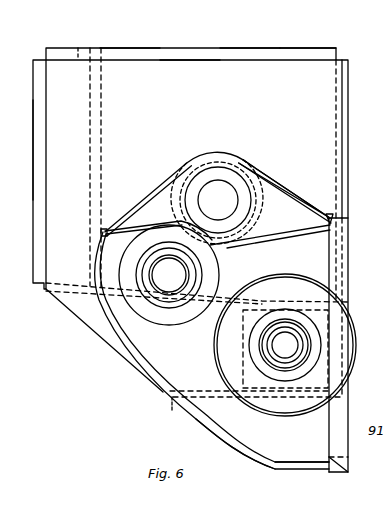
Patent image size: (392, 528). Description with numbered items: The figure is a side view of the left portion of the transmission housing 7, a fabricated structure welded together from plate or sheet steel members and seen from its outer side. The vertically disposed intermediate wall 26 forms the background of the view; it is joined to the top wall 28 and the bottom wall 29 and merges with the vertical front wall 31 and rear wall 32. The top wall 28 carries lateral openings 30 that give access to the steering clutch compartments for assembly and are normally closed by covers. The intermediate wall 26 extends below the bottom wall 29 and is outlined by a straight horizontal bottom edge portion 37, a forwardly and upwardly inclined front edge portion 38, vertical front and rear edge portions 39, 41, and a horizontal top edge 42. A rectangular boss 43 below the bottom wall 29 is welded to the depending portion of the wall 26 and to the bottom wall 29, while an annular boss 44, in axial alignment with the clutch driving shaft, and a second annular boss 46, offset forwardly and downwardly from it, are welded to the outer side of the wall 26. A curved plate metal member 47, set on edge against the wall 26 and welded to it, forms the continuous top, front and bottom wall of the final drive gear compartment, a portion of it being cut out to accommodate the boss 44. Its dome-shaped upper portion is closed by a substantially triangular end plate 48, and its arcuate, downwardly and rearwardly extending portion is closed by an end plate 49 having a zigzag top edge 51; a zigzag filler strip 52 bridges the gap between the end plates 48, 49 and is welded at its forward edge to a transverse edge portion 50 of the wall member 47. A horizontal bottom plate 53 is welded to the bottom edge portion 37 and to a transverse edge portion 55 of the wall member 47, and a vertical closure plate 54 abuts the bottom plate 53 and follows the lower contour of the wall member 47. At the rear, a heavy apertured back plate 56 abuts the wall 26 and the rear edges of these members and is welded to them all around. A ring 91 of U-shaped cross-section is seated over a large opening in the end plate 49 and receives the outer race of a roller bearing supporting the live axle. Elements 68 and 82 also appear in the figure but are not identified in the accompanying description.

The transmission housing 7 is at (292, 91).
The intermediate wall 26 is at (181, 64).
The top wall 28 is at (286, 54).
The bottom wall 29 is at (262, 307).
The lateral openings 30 is at (138, 56).
The front wall 31 is at (40, 143).
The rear wall 32 is at (344, 160).
The bottom edge portion 37 is at (163, 392).
The front edge portion 38 is at (112, 345).
The front edge portion 39 is at (46, 191).
The rear edge portion 41 is at (344, 84).
The top edge 42 is at (240, 59).
The rectangular boss 43 is at (243, 364).
The annular boss 44 is at (241, 166).
The annular boss 46 is at (190, 273).
The curved plate metal member 47 is at (282, 194).
The triangular end plate 48 is at (300, 206).
The end plate 49 is at (330, 266).
The transverse edge portion 50 is at (105, 231).
The zigzag top edge 51 is at (278, 234).
The filler strip 52 is at (146, 227).
The bottom plate 53 is at (212, 397).
The closure plate 54 is at (285, 462).
The transverse edge portion 55 is at (168, 415).
The back plate 56 is at (338, 473).
The drive belt 68 is at (188, 179).
The drive pulley rim 82 is at (216, 278).
The ring 91 is at (275, 410).